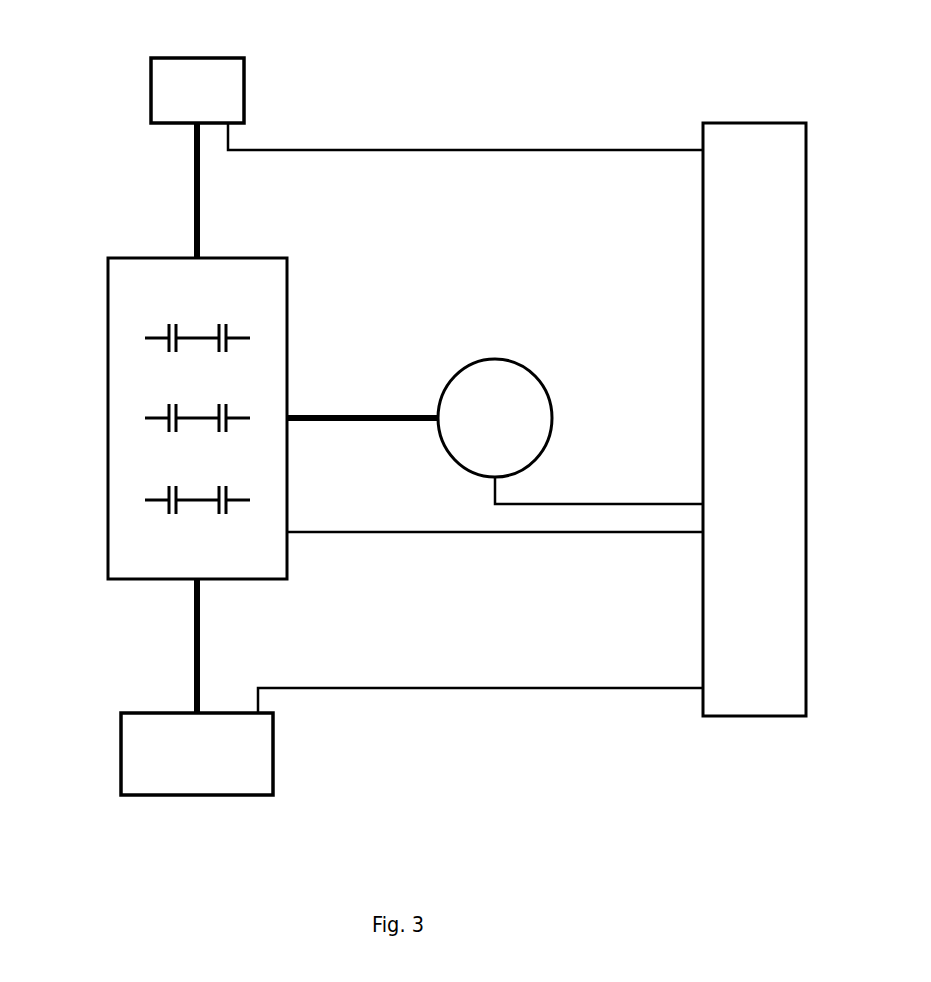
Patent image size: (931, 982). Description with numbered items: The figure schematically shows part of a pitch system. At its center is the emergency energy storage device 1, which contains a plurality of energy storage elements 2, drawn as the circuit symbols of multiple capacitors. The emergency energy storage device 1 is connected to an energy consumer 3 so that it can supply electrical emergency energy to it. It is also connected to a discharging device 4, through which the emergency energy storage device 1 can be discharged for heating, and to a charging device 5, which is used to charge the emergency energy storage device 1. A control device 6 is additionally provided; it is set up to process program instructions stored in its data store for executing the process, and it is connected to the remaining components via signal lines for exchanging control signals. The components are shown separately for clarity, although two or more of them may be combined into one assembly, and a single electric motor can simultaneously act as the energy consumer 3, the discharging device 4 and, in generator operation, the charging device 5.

The emergency energy storage device 1 is at (263, 258).
The energy storage elements 2 is at (212, 343).
The energy consumer 3 is at (507, 360).
The discharging device 4 is at (273, 782).
The charging device 5 is at (217, 58).
The control device 6 is at (806, 330).